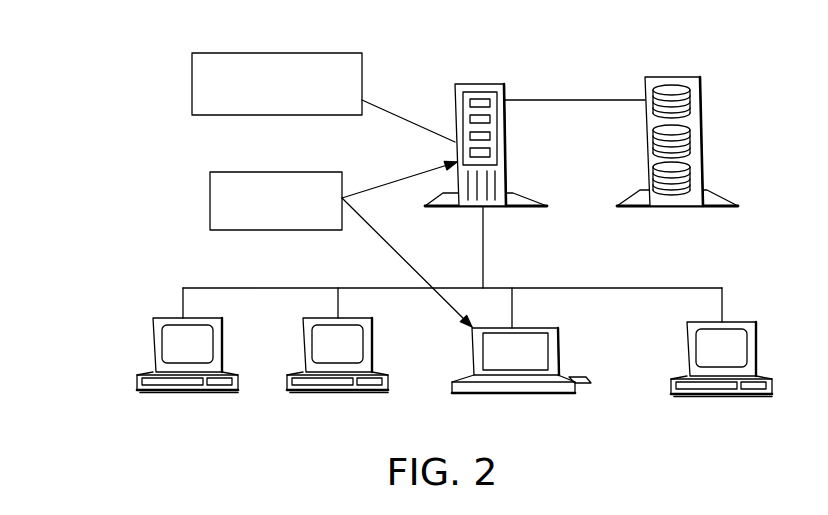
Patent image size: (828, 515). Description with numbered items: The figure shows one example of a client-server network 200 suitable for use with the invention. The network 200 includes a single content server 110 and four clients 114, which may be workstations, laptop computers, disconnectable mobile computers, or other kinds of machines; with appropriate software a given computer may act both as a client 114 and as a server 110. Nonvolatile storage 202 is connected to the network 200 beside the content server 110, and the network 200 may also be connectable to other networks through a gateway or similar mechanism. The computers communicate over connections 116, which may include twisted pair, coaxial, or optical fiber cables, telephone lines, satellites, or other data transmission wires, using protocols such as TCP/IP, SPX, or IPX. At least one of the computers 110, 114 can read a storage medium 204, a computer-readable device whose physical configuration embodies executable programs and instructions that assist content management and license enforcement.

The client-server network 200 is at (419, 230).
The storage medium 204 is at (329, 230).
The content server 110 is at (508, 170).
The nonvolatile storage 202 is at (645, 141).
The connections 116 is at (462, 267).
The clients 114 is at (466, 375).